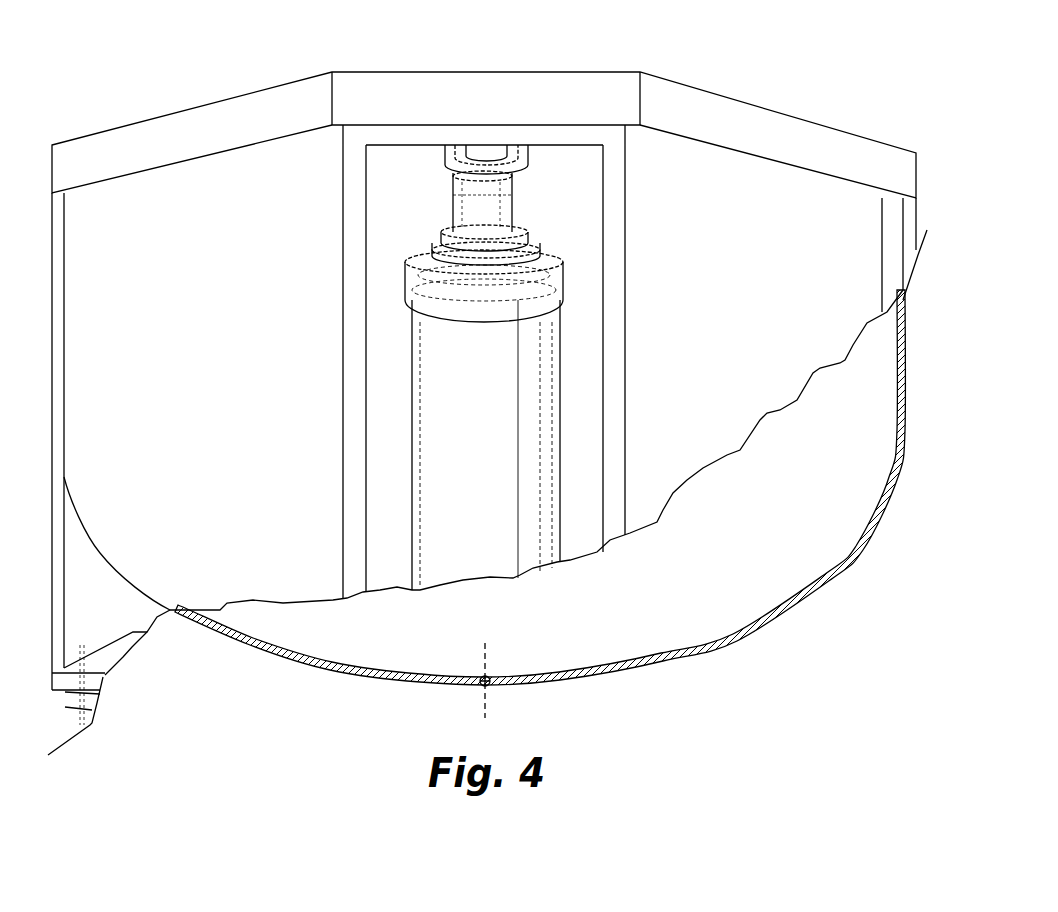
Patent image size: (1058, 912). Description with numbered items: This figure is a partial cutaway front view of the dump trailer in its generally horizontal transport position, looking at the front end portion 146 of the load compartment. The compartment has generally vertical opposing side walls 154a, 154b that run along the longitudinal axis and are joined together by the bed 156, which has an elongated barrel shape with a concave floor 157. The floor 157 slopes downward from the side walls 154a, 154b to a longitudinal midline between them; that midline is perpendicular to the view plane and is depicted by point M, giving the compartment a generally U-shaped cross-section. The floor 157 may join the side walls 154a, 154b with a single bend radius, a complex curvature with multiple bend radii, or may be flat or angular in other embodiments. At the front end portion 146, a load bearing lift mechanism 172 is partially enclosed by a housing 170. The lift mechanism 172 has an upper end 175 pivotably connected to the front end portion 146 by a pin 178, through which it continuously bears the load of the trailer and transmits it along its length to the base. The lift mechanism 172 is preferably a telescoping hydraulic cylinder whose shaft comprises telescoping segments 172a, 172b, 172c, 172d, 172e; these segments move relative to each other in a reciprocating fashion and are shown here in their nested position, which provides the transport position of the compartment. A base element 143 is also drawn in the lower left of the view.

The front end portion 146 is at (427, 98).
The pin 178 is at (498, 150).
The upper end 175 is at (522, 198).
The load bearing lift mechanism 172 is at (410, 363).
The telescoping segment 172a is at (565, 270).
The telescoping segment 172b is at (550, 253).
The telescoping segment 172c is at (537, 243).
The telescoping segment 172d is at (442, 230).
The telescoping segment 172e is at (455, 193).
The housing 170 is at (602, 402).
The side wall 154a is at (893, 365).
The side wall 154b is at (64, 312).
The base 143 is at (226, 622).
The concave floor 157 is at (737, 633).
The bed 156 is at (692, 660).
The point M is at (487, 684).